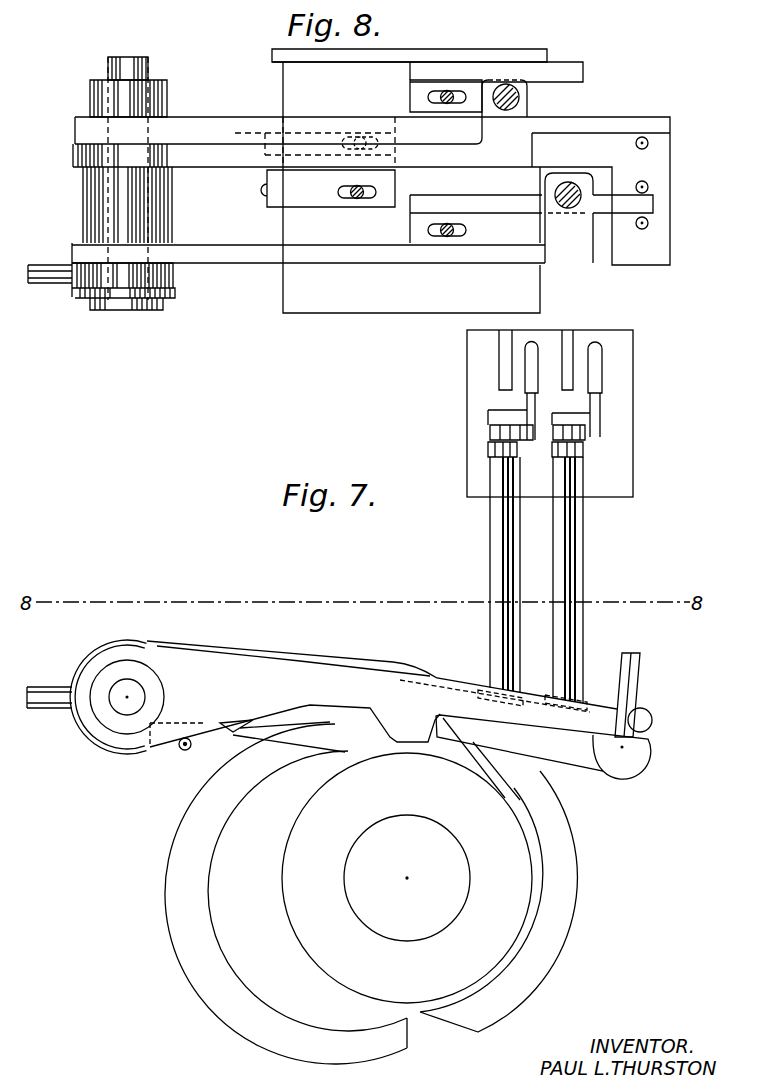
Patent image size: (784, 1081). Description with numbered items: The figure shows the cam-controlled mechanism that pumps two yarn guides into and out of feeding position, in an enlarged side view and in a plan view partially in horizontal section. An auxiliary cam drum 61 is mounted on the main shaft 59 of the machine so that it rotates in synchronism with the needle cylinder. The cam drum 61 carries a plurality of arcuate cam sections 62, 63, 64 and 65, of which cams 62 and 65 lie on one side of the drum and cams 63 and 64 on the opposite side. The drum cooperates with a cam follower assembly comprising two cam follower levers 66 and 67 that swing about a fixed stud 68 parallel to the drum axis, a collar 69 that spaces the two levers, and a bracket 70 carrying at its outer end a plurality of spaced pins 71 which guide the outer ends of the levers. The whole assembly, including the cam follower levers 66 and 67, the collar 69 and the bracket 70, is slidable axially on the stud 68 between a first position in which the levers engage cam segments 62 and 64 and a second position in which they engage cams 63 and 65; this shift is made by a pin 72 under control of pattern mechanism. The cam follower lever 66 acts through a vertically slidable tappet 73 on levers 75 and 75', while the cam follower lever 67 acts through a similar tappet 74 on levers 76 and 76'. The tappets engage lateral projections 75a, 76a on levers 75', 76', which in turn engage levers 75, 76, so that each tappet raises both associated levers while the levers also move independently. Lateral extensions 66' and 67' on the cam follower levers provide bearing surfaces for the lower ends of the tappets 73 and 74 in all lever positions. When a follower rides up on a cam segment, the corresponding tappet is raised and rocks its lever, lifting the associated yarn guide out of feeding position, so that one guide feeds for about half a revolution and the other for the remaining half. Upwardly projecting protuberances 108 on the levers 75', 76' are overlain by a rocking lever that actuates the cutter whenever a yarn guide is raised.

In FIG. 7, the main shaft 59 is at (381, 817).
In FIG. 8, the auxiliary cam drum 61 is at (355, 315).
In FIG. 7, the auxiliary cam drum 61 is at (533, 878).
In FIG. 8, the arcuate cam section 62 is at (583, 73).
In FIG. 8, the arcuate cam section 63 is at (252, 118).
In FIG. 8, the arcuate cam section 64 is at (251, 172).
In FIG. 7, the arcuate cam section 64 is at (237, 898).
In FIG. 8, the arcuate cam section 65 is at (470, 199).
In FIG. 7, the arcuate cam section 65 is at (561, 950).
In FIG. 8, the cam follower lever 66 is at (291, 155).
In FIG. 7, the cam follower lever 66 is at (382, 688).
In FIG. 8, the lateral extension 66' is at (482, 111).
In FIG. 7, the lateral extension 66' is at (495, 683).
In FIG. 8, the cam follower lever 67 is at (308, 270).
In FIG. 7, the cam follower lever 67 is at (293, 652).
In FIG. 8, the lateral extension 67' is at (569, 234).
In FIG. 8, the fixed stud 68 is at (146, 72).
In FIG. 7, the fixed stud 68 is at (121, 702).
In FIG. 8, the collar 69 is at (86, 198).
In FIG. 8, the bracket 70 is at (181, 117).
In FIG. 7, the bracket 70 is at (634, 765).
In FIG. 8, the spaced pins 71 is at (649, 144).
In FIG. 7, the spaced pins 71 is at (641, 680).
In FIG. 8, the pin 72 is at (40, 286).
In FIG. 7, the pin 72 is at (44, 686).
In FIG. 8, the tappet 73 is at (502, 84).
In FIG. 7, the tappet 73 is at (489, 563).
In FIG. 8, the tappet 74 is at (554, 202).
In FIG. 7, the tappet 74 is at (570, 560).
In FIG. 7, the lever 75 is at (589, 341).
In FIG. 7, the lever 75' is at (484, 413).
In FIG. 7, the lateral projection 75a is at (488, 418).
In FIG. 7, the lever 76 is at (535, 413).
In FIG. 7, the lever 76' is at (613, 414).
In FIG. 7, the lateral projection 76a is at (563, 423).
In FIG. 7, the protuberances 108 is at (533, 341).